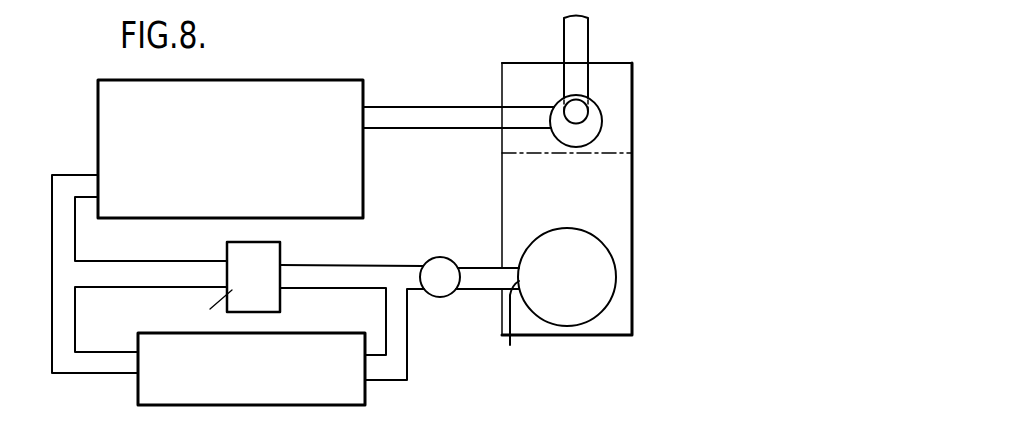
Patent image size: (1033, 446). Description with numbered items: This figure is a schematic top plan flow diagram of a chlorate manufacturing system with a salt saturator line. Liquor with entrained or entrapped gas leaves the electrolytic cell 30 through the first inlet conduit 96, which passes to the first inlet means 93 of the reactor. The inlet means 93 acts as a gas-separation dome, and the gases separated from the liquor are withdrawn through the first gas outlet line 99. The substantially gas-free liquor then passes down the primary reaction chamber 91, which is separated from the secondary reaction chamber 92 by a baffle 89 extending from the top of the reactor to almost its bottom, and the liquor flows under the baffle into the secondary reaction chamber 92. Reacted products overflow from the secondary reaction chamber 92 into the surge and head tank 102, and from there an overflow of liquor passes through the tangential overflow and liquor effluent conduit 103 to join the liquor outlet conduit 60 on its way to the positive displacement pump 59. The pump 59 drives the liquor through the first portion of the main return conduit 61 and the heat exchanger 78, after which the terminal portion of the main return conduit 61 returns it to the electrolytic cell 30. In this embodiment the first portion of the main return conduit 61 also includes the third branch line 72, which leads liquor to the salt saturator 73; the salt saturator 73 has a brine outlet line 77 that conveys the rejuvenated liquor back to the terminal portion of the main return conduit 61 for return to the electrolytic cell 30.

The electrolytic cell 30 is at (344, 82).
The first inlet conduit 96 is at (425, 108).
The first gas outlet line 99 is at (590, 36).
The first inlet means 93 is at (594, 110).
The primary reaction chamber 91 is at (623, 123).
The baffle 89 is at (591, 154).
The secondary reaction chamber 92 is at (618, 243).
The surge and head tank 102 is at (602, 298).
The tangential overflow and liquor effluent conduit 103 is at (524, 327).
The positive displacement pump 59 is at (449, 258).
The liquor outlet conduit 60 is at (478, 290).
The main return conduit 61 is at (67, 186).
The heat exchanger 78 is at (282, 309).
The third branch line 72 is at (405, 342).
The salt saturator 73 is at (365, 392).
The brine outlet line 77 is at (94, 359).